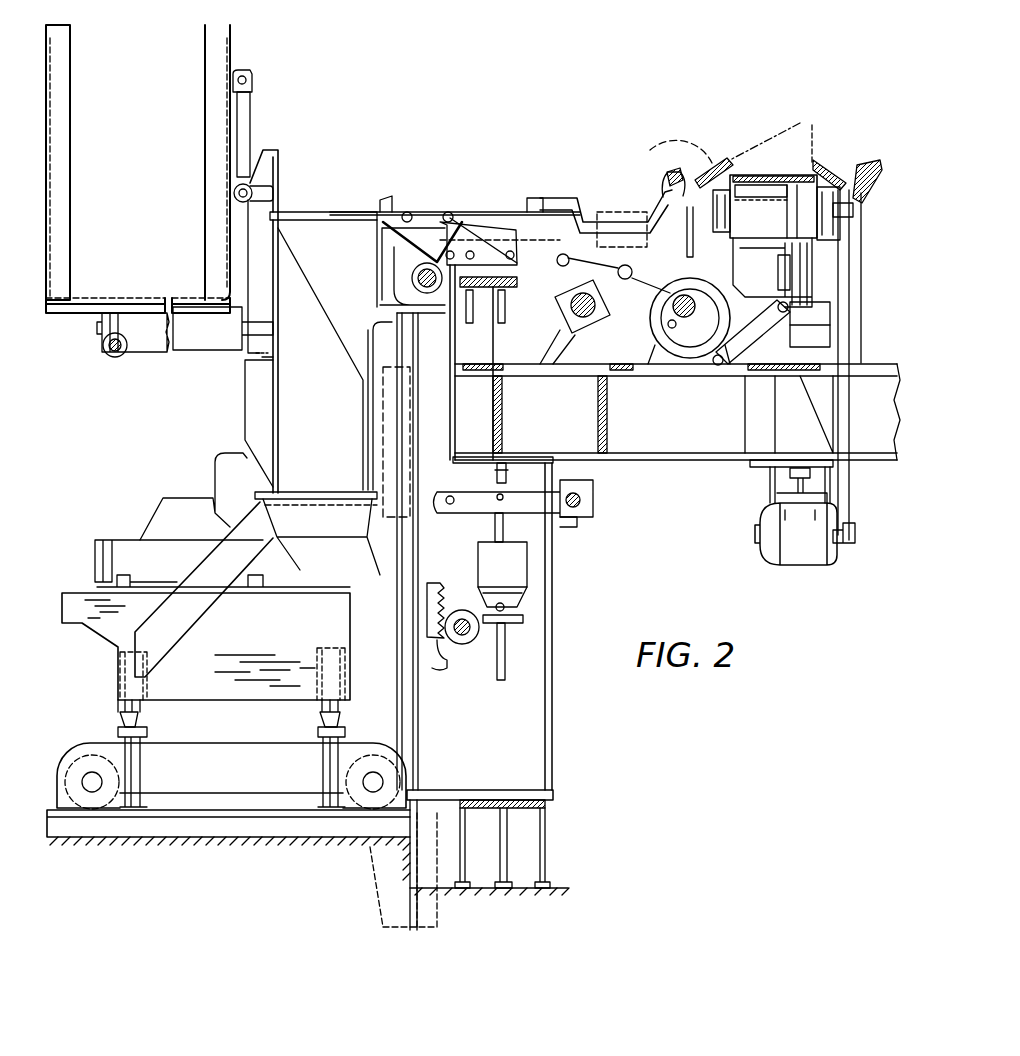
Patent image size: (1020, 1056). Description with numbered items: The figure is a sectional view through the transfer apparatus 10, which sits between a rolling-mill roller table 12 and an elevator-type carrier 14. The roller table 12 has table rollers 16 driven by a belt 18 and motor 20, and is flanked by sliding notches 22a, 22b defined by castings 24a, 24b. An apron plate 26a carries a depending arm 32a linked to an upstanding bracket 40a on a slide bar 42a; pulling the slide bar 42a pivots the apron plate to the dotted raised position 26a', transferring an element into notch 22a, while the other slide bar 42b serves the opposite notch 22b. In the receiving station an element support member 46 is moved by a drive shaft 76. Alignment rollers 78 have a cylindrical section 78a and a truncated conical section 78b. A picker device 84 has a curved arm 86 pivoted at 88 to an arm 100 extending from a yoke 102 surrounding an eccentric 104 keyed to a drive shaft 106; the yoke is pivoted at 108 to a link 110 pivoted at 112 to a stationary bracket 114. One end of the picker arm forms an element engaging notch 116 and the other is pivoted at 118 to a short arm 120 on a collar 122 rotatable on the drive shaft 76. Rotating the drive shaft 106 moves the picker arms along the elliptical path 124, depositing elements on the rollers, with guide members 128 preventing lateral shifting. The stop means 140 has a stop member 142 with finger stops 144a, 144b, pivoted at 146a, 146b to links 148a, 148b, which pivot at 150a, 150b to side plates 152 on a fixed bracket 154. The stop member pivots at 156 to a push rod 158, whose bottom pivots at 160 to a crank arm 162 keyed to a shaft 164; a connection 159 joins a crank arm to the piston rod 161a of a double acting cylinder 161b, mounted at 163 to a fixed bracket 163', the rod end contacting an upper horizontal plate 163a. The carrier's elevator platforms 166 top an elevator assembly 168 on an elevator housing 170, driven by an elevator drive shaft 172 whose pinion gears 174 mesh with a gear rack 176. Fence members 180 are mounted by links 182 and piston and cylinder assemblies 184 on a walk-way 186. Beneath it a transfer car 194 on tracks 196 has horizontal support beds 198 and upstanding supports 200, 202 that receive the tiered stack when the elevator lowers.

The transfer apparatus 10 is at (544, 147).
The roller table 12 is at (775, 168).
The elevator-type carrier 14 is at (320, 189).
The table rollers 16 is at (760, 240).
The belt 18 is at (850, 415).
The motor 20 is at (802, 555).
The sliding notch 22a is at (686, 156).
The sliding notch 22b is at (867, 164).
The castings 24a is at (700, 177).
The castings 24b is at (827, 160).
The apron plate 26a is at (749, 131).
The raised position of apron plate 26a' is at (781, 117).
The depending arm 32a is at (853, 213).
The upstanding bracket 40a is at (793, 267).
The slide bar 42a is at (813, 290).
The slide bar 42b is at (777, 308).
The element support member 46 is at (512, 207).
The pivotal connection 150b is at (541, 288).
The drive shaft 76 is at (530, 365).
The alignment rollers 78 is at (611, 196).
The cylindrical section 78a is at (628, 193).
The truncated conical section 78b is at (593, 205).
The picker device 84 is at (617, 376).
The curved arm 86 is at (637, 260).
The pivotal connection 88 is at (595, 306).
The arm 100 is at (621, 350).
The yoke 102 is at (685, 353).
The eccentric 104 is at (683, 307).
The drive shaft 106 is at (670, 325).
The pivotal connection 108 is at (720, 378).
The link 110 is at (765, 335).
The pivotal connection 112 is at (827, 305).
The stationary bracket 114 is at (827, 337).
The element engaging notch 116 is at (688, 238).
The pivotal connection 118 is at (557, 287).
The short arm 120 is at (567, 303).
The collar 122 is at (563, 364).
The elliptical path 124 is at (657, 140).
The guide members 128 is at (663, 197).
The stop means 140 is at (396, 175).
The stop member 142 is at (387, 230).
The front finger stop 144a is at (400, 225).
The rear finger stop 144b is at (533, 207).
The pivotal connection 146a is at (407, 213).
The pivotal connection 146b is at (467, 323).
The link 148a is at (445, 212).
The link 148b is at (501, 323).
The pivotal connection 150a is at (450, 218).
The side plates 152 is at (520, 233).
The fixed bracket 154 is at (380, 299).
The pivotal connection 156 is at (405, 262).
The push rod 158 is at (455, 388).
The connection 159 is at (502, 498).
The pivotal connection 160 is at (448, 507).
The piston rod 161a is at (510, 545).
The double acting cylinder 161b is at (527, 577).
The crank arm 162 is at (543, 497).
The pivotal mounting 163 is at (513, 641).
The fixed bracket 163' is at (558, 637).
The upper horizontal plate 163a is at (522, 463).
The shaft 164 is at (582, 517).
The elevator platforms 166 is at (289, 212).
The elevator assembly 168 is at (322, 336).
The elevator housing 170 is at (533, 598).
The elevator drive shaft 172 is at (467, 642).
The pinion gears 174 is at (437, 660).
The gear rack 176 is at (448, 577).
The fence members 180 is at (255, 252).
The links 182 is at (244, 110).
The piston and cylinder assemblies 184 is at (199, 336).
The walk-way 186 is at (163, 155).
The transfer car 194 is at (168, 471).
The tracks 196 is at (223, 823).
The horizontal support beds 198 is at (287, 492).
The upstanding support 200 is at (260, 417).
The upstanding support 202 is at (390, 430).